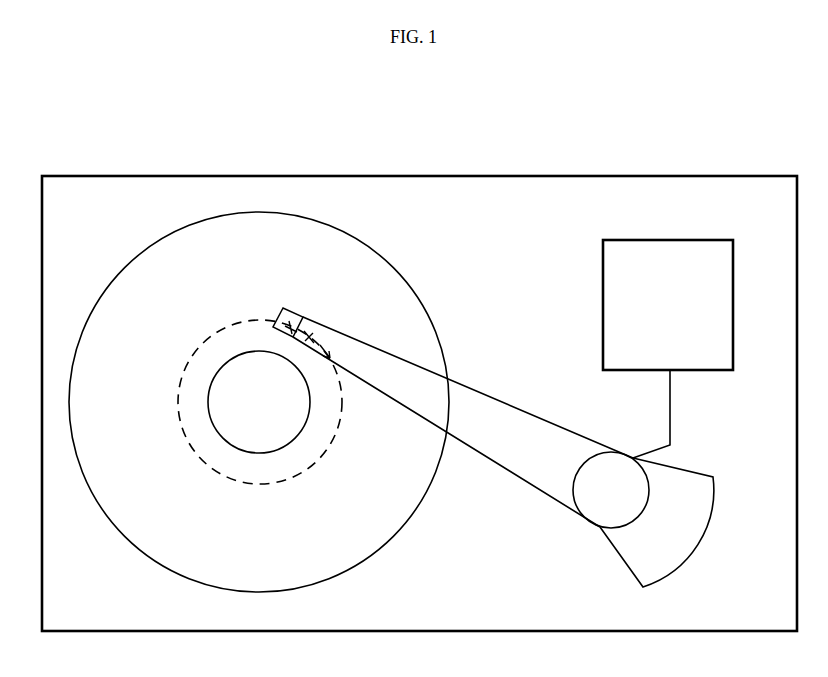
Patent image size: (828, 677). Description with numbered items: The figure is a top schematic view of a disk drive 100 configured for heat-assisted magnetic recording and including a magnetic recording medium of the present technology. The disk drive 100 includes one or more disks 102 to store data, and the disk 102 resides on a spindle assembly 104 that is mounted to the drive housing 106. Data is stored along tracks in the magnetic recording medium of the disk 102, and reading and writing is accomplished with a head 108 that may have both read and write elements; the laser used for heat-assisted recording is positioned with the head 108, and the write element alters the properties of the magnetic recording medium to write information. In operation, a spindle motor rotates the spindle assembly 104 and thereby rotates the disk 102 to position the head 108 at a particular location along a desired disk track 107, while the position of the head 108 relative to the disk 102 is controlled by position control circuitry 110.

The disk drive 100 is at (177, 147).
The disk 102 is at (393, 263).
The spindle assembly 104 is at (278, 406).
The drive housing 106 is at (503, 175).
The disk track 107 is at (212, 337).
The head 108 is at (303, 320).
The position control circuitry 110 is at (683, 320).